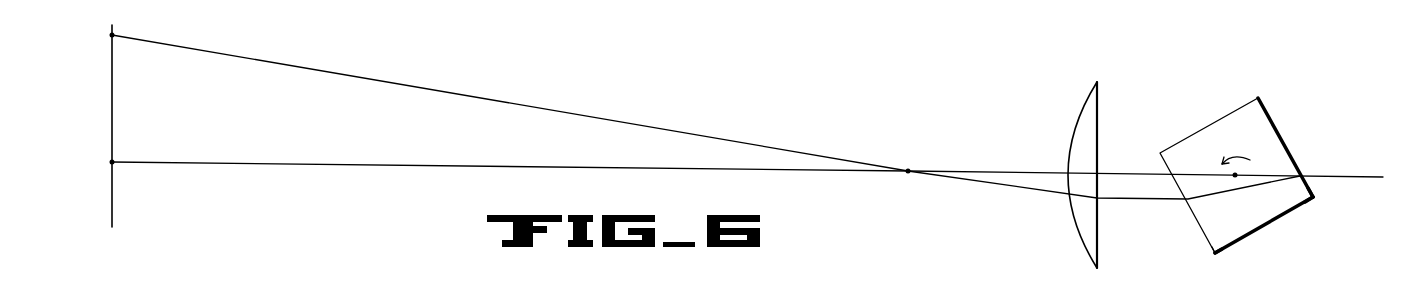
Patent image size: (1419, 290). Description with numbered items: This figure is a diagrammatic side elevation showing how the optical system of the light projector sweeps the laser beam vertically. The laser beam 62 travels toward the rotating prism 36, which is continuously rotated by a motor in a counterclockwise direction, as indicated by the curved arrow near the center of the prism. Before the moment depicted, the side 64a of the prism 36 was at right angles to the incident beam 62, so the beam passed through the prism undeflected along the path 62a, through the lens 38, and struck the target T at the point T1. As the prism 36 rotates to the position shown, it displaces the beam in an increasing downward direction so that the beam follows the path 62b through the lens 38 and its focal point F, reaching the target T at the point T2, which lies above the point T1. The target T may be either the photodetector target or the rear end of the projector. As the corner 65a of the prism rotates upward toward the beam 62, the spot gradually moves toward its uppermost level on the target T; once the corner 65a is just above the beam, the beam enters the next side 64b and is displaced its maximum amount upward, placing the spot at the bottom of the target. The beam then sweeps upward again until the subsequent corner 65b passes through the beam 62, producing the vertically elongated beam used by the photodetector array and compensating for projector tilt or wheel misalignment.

The target T is at (112, 96).
The point T2 is at (116, 34).
The point T1 is at (115, 160).
The undeflected path 62a is at (404, 165).
The displaced beam path 62b is at (487, 98).
The laser beam 62 is at (1338, 175).
The focal point F is at (909, 168).
The lens 38 is at (1080, 114).
The rotating prism 36 is at (1262, 103).
The side of prism 64a is at (1271, 119).
The next side of prism 64b is at (1280, 218).
The corner of prism 65a is at (1316, 197).
The subsequent corner of prism 65b is at (1217, 256).